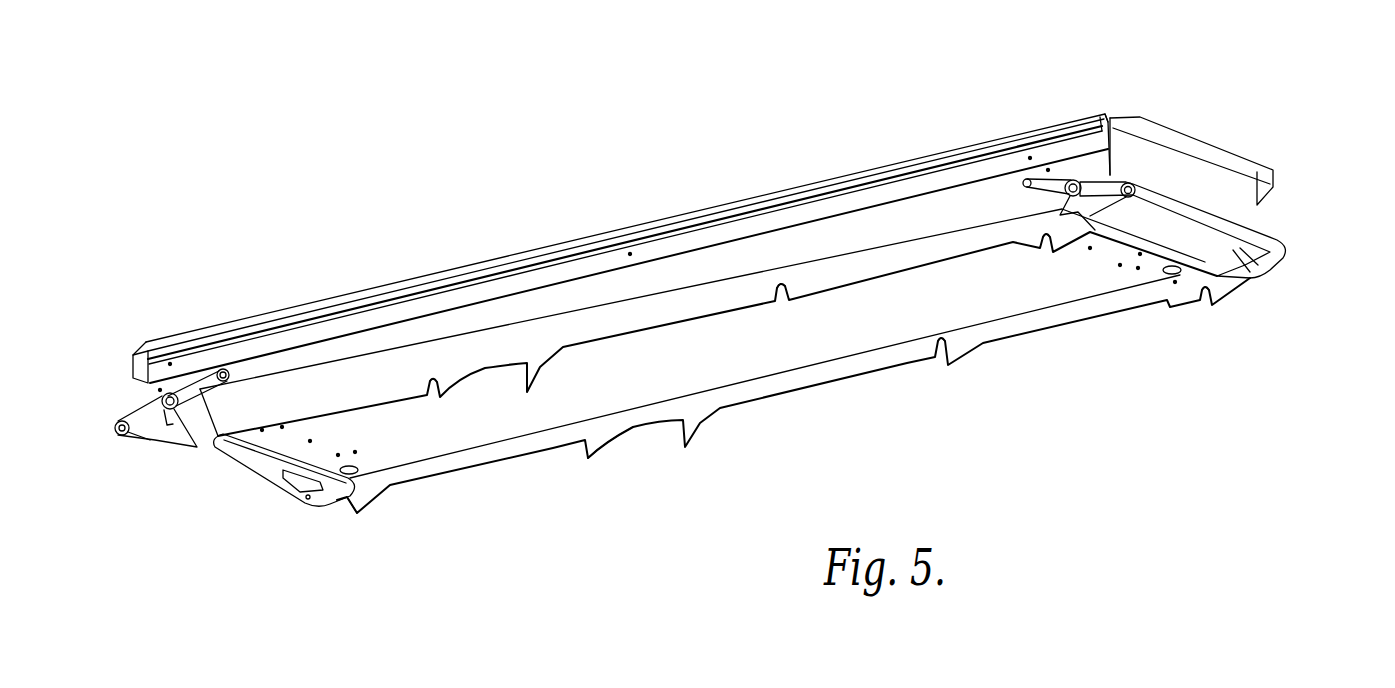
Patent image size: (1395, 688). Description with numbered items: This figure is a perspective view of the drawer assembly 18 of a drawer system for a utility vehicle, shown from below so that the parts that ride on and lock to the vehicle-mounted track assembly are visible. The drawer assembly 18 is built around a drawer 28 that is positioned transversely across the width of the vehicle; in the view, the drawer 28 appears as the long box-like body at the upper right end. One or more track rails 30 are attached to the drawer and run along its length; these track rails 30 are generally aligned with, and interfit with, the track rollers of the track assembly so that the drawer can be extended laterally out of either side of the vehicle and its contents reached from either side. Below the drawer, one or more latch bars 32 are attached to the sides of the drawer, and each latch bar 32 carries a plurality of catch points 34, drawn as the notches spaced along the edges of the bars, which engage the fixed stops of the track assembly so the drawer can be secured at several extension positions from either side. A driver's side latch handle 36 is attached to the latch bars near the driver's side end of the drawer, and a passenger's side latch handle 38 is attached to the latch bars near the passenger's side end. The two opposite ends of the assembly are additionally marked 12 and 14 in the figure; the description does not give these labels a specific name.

The carrier assembly left end 12 is at (101, 367).
The carrier assembly right end 14 is at (1296, 114).
The drawer assembly 18 is at (579, 154).
The drawer 28 is at (1185, 160).
The track rail 30 is at (935, 185).
The latch bar 32 is at (655, 315).
The catch point 34 is at (528, 373).
The driver's side latch handle 36 is at (242, 478).
The passenger's side latch handle 38 is at (1285, 237).